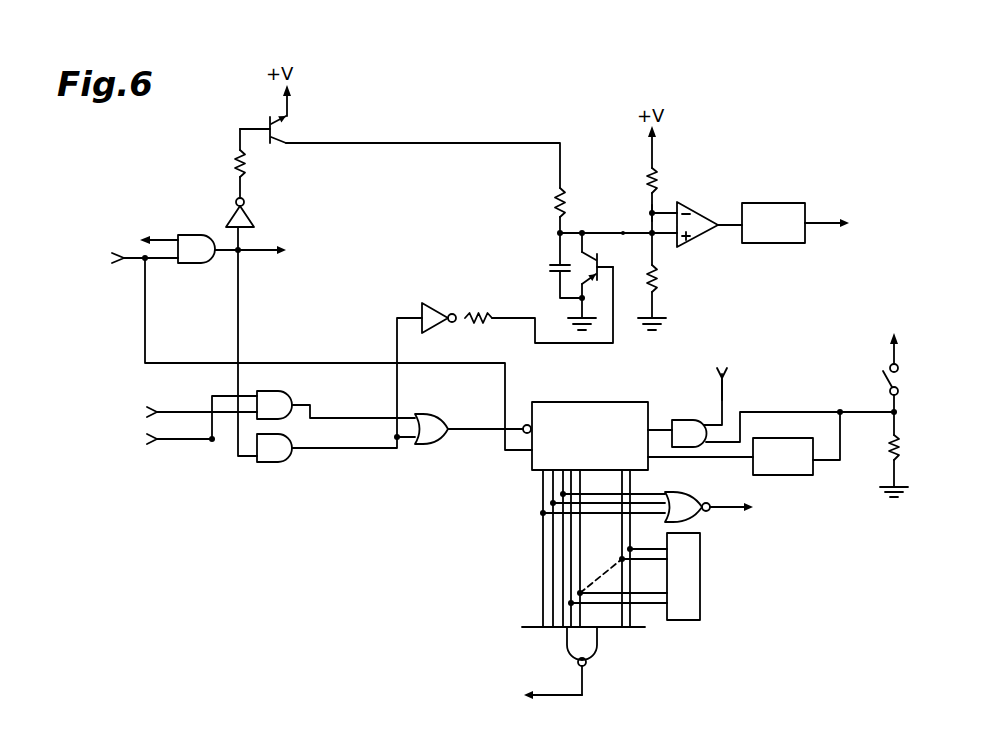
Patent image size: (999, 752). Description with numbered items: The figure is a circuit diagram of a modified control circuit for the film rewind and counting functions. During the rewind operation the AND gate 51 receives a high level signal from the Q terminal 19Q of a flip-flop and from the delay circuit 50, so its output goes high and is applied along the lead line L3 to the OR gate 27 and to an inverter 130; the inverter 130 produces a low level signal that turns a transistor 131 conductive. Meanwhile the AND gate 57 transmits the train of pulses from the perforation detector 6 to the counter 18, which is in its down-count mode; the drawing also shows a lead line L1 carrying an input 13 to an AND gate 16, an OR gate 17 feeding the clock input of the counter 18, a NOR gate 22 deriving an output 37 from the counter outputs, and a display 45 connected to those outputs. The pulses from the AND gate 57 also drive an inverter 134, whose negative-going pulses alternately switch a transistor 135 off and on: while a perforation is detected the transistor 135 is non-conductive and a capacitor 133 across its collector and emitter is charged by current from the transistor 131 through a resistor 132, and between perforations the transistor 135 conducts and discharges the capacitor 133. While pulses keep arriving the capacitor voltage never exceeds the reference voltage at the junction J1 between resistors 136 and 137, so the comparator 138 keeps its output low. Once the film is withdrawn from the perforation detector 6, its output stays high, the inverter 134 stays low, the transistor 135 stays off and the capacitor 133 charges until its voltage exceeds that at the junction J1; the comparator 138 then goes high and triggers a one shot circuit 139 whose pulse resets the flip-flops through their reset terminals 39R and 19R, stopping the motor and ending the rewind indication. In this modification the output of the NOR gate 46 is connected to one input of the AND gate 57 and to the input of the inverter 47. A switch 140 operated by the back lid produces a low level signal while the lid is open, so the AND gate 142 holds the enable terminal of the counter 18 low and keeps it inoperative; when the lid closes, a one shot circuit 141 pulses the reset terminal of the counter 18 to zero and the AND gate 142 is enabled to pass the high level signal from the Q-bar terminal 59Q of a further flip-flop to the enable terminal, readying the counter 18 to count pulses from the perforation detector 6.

The transistor 131 is at (287, 122).
The inverter 130 is at (249, 213).
The AND gate 51 is at (196, 264).
The delay circuit 50 is at (149, 231).
The Q terminal of flip-flop 19Q is at (117, 259).
The OR gate 27 is at (334, 251).
The lead line L3 is at (260, 252).
The line L1 is at (187, 412).
The input signal 13 is at (134, 411).
The perforation detector 6 is at (168, 440).
The AND gate 16 is at (274, 395).
The AND gate 57 is at (279, 462).
The OR gate 17 is at (432, 437).
The counter 18 is at (590, 402).
The NOR gate 22 is at (687, 495).
The output line 37 is at (766, 508).
The display 45 is at (701, 570).
The NOR gate 46 is at (597, 642).
The inverter 47 is at (516, 695).
The AND gate 142 is at (690, 423).
The Q-bar terminal of flip-flop 59Q is at (757, 347).
The one shot circuit 141 is at (814, 467).
The switch 140 is at (901, 380).
The resistor 132 is at (553, 205).
The capacitor 133 is at (550, 265).
The inverter 134 is at (438, 303).
The transistor 135 is at (598, 261).
The junction J1 is at (650, 213).
The resistor 136 is at (660, 178).
The resistor 137 is at (663, 282).
The comparator 138 is at (700, 239).
The one shot circuit 139 is at (784, 244).
The reset terminal of flip-flop 39R is at (848, 218).
The reset terminal of flip-flop 19R is at (856, 238).